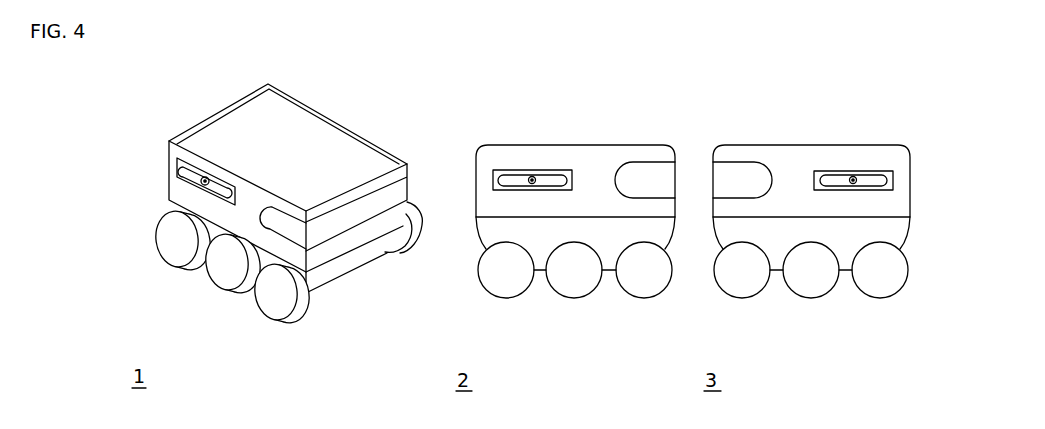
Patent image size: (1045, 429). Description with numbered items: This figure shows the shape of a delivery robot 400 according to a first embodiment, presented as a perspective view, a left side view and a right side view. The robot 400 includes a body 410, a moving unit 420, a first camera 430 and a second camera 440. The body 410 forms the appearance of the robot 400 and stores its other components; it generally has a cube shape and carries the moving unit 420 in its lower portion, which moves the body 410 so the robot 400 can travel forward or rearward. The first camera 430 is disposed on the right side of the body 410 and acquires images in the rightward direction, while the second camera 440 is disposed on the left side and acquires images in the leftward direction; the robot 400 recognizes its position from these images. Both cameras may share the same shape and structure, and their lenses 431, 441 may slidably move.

The robot 400 is at (533, 217).
The body 410 is at (234, 128).
The moving unit 420 is at (295, 316).
The first camera 430 is at (178, 157).
The lens 431 is at (197, 184).
The second camera 440 is at (853, 177).
The lens 441 is at (857, 183).